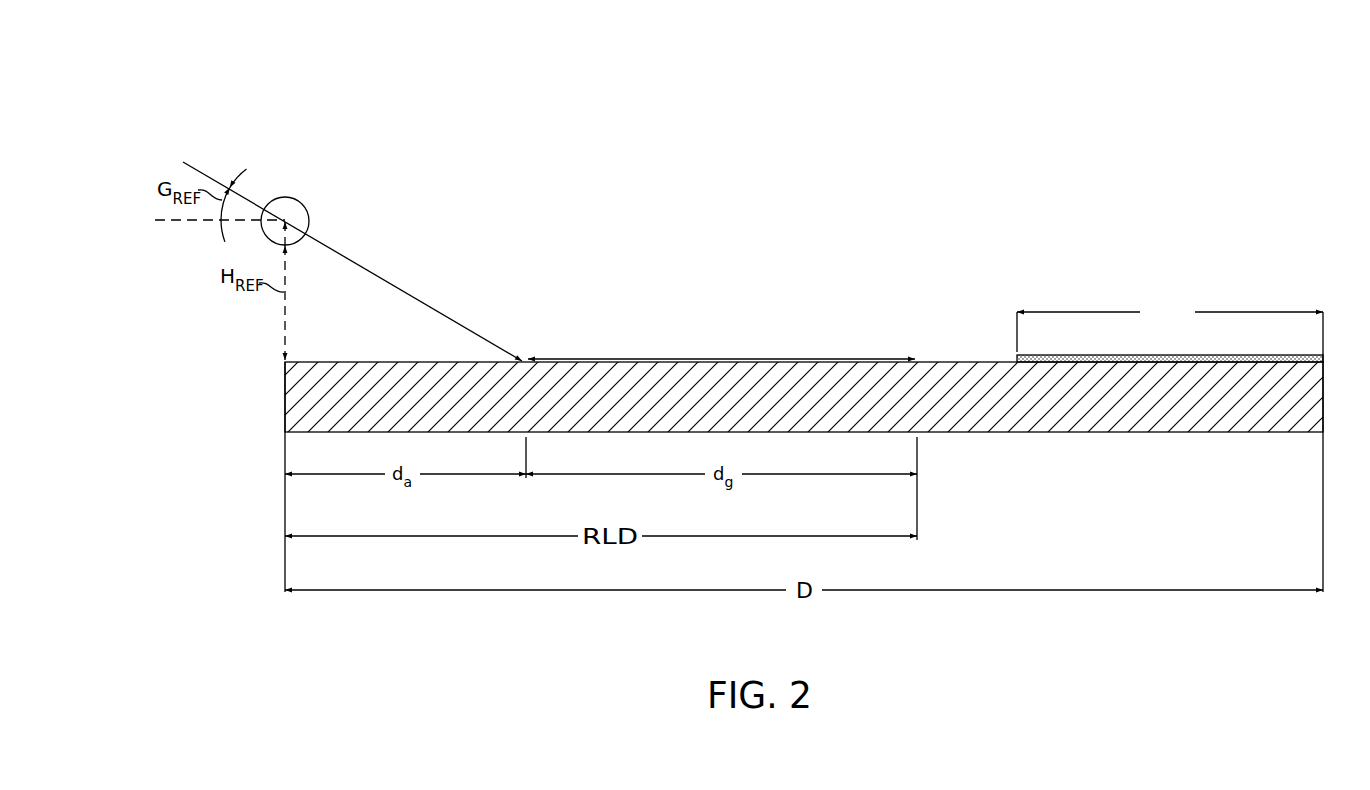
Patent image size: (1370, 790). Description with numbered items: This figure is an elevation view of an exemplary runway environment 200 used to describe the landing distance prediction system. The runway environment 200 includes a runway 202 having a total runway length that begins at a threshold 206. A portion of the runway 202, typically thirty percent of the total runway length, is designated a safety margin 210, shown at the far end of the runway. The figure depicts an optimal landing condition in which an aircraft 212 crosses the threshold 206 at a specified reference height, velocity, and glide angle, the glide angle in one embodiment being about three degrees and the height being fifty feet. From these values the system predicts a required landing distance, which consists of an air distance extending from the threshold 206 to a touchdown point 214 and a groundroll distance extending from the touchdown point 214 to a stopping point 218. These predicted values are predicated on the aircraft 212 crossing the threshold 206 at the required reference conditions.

The runway environment 200 is at (548, 130).
The runway 202 is at (335, 374).
The threshold 206 is at (285, 394).
The safety margin 210 is at (1170, 446).
The aircraft 212 is at (285, 197).
The touchdown point 214 is at (530, 358).
The stopping point 218 is at (916, 358).